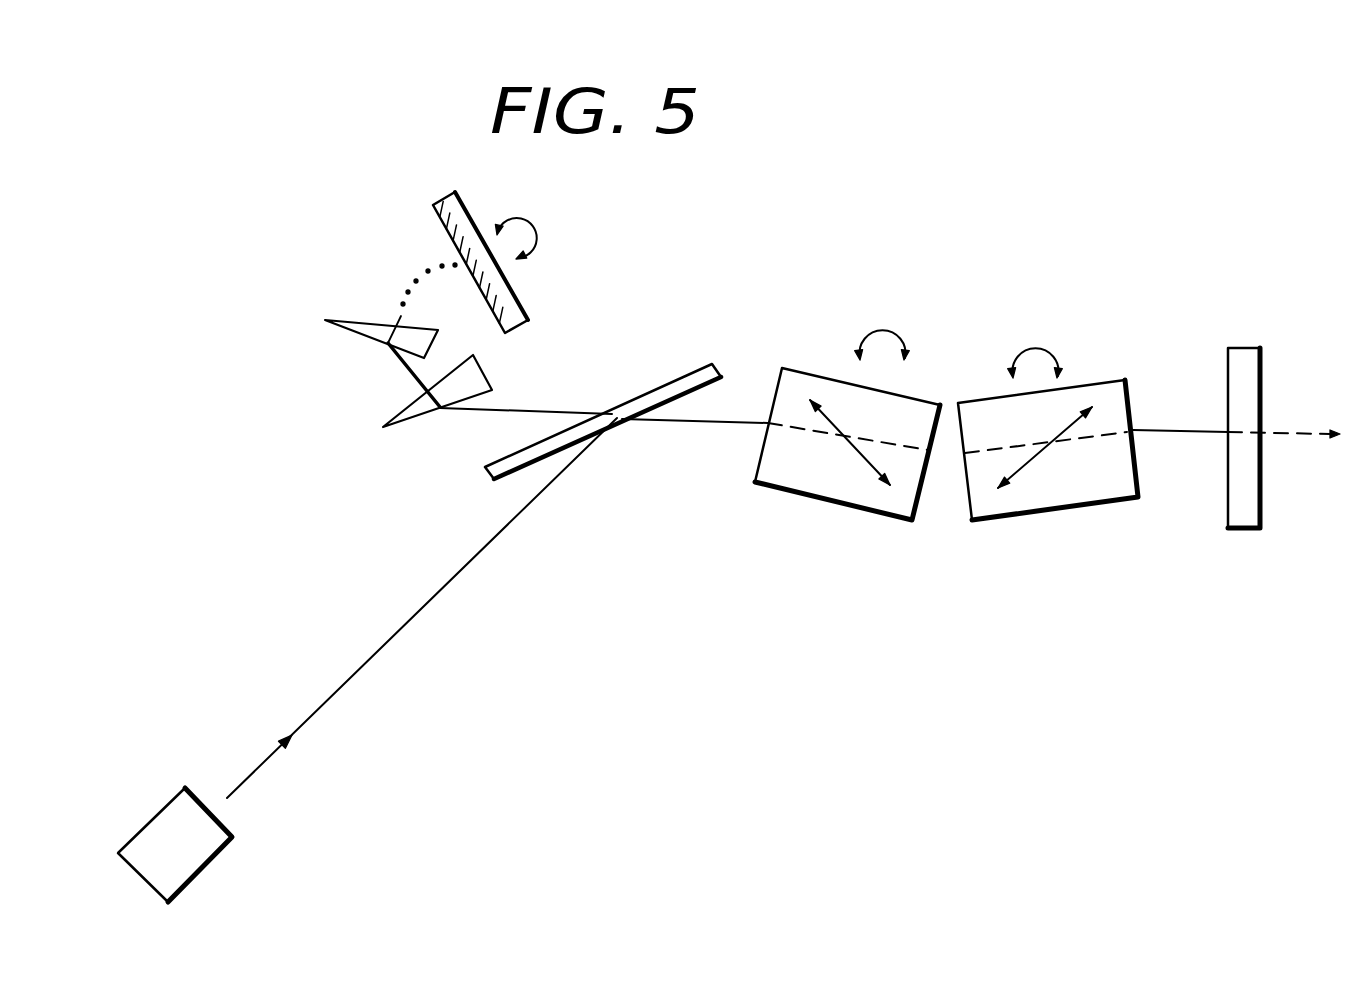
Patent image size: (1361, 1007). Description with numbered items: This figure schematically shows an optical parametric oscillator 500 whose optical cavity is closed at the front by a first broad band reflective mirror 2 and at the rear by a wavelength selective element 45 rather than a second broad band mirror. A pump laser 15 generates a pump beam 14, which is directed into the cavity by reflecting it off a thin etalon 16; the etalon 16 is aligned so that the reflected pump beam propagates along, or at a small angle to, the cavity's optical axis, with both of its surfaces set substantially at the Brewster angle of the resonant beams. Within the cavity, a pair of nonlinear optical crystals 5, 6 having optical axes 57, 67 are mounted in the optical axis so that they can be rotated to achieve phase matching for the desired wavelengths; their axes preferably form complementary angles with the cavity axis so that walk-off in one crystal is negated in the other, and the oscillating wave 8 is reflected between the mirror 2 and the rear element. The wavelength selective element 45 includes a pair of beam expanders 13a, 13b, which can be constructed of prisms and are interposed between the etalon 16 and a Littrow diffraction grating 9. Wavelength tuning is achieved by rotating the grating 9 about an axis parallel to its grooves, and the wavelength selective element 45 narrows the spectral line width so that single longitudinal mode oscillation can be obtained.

The first broad band reflective mirror 2 is at (1245, 348).
The nonlinear optical crystal 5 is at (857, 510).
The nonlinear optical crystal 6 is at (1072, 503).
The oscillating wave 8 is at (1330, 437).
The Littrow diffraction grating 9 is at (463, 192).
The beam expander 13a is at (433, 423).
The beam expander 13b is at (380, 305).
The pump beam 14 is at (316, 707).
The pump laser 15 is at (193, 787).
The etalon 16 is at (724, 367).
The wavelength selective element 45 is at (378, 205).
The optical axis 57 is at (850, 440).
The optical axis 67 is at (1020, 467).
The optical parametric oscillator 500 is at (930, 622).